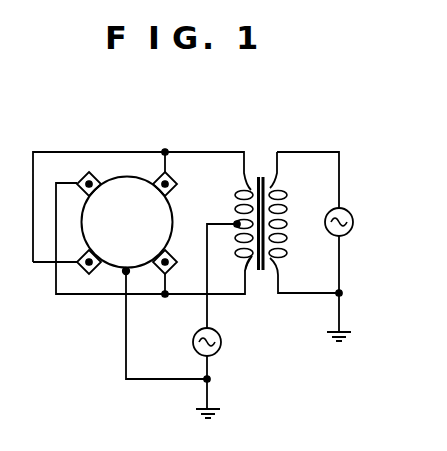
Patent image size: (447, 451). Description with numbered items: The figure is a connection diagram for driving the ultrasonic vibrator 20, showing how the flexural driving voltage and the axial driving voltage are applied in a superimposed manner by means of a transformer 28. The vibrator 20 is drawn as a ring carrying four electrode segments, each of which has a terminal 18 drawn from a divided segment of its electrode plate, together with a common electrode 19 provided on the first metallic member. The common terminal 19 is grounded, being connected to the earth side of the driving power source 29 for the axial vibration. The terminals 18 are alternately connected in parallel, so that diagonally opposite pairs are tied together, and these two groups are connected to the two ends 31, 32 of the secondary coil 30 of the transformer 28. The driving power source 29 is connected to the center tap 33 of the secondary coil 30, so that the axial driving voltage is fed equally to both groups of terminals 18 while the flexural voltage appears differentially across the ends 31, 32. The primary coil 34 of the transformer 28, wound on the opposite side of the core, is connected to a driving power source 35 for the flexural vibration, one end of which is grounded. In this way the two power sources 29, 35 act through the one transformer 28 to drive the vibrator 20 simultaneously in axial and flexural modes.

The terminal 18 is at (85, 174).
The common electrode 19 is at (124, 275).
The ultrasonic vibrator 20 is at (127, 187).
The transformer 28 is at (261, 209).
The driving power source for the axial vibration 29 is at (219, 350).
The secondary coil 30 is at (260, 177).
The end of the secondary coil 31 is at (247, 180).
The end of the secondary coil 32 is at (250, 264).
The center tap 33 is at (237, 226).
The primary coil 34 is at (285, 258).
The driving power source for the flexural vibration 35 is at (352, 216).